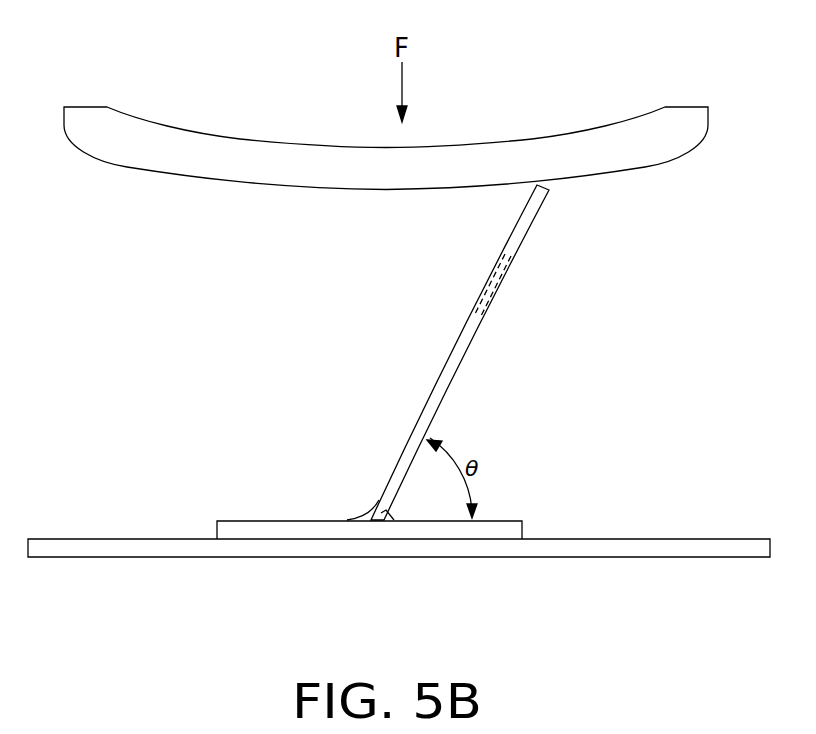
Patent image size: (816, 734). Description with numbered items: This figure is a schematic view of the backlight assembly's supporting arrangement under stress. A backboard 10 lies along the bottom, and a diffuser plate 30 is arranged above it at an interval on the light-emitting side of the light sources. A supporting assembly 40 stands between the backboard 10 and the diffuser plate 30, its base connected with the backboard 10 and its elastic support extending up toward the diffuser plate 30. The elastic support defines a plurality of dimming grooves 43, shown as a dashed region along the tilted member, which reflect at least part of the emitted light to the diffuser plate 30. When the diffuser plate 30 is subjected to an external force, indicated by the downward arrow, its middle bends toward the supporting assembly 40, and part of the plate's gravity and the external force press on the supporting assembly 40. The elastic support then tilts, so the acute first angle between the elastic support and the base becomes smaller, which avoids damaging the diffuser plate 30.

The backboard 10 is at (78, 546).
The diffuser plate 30 is at (93, 128).
The supporting assembly 40 is at (444, 393).
The dimming grooves 43 is at (478, 300).